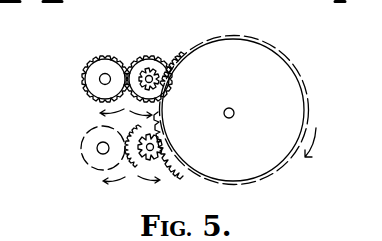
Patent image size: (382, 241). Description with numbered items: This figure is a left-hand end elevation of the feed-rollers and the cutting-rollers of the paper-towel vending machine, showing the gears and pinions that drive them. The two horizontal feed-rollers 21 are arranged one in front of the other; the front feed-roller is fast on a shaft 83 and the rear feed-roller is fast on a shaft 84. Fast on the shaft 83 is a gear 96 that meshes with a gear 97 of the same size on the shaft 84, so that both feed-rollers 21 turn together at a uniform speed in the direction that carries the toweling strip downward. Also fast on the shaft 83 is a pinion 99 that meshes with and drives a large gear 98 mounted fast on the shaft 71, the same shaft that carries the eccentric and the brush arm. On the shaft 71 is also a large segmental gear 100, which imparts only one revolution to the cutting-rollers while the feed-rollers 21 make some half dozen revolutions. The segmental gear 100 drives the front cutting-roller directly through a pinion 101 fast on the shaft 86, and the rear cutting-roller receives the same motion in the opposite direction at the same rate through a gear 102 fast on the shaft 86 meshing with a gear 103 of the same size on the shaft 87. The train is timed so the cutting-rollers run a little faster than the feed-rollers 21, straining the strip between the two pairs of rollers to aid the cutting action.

The feed-rollers 21 is at (88, 82).
The shaft 71 is at (234, 112).
The shaft 83 is at (148, 75).
The shaft 84 is at (104, 74).
The shaft 86 is at (160, 144).
The shaft 87 is at (98, 152).
The gear 96 is at (162, 53).
The gear 97 is at (86, 63).
The large gear 98 is at (181, 56).
The pinion 99 is at (166, 73).
The segmental gear 100 is at (239, 110).
The pinion 101 is at (160, 160).
The gear 102 is at (148, 120).
The gear 103 is at (92, 127).